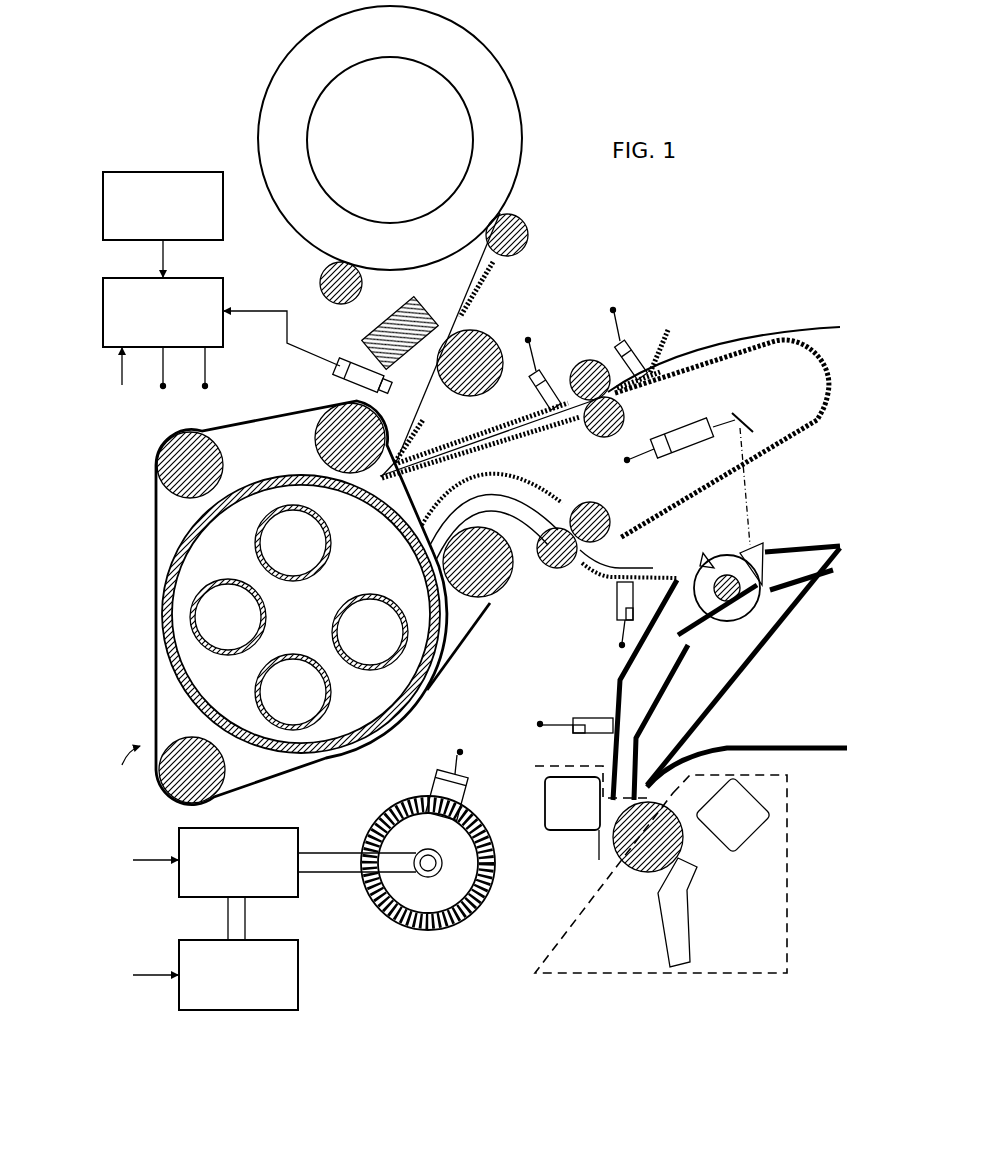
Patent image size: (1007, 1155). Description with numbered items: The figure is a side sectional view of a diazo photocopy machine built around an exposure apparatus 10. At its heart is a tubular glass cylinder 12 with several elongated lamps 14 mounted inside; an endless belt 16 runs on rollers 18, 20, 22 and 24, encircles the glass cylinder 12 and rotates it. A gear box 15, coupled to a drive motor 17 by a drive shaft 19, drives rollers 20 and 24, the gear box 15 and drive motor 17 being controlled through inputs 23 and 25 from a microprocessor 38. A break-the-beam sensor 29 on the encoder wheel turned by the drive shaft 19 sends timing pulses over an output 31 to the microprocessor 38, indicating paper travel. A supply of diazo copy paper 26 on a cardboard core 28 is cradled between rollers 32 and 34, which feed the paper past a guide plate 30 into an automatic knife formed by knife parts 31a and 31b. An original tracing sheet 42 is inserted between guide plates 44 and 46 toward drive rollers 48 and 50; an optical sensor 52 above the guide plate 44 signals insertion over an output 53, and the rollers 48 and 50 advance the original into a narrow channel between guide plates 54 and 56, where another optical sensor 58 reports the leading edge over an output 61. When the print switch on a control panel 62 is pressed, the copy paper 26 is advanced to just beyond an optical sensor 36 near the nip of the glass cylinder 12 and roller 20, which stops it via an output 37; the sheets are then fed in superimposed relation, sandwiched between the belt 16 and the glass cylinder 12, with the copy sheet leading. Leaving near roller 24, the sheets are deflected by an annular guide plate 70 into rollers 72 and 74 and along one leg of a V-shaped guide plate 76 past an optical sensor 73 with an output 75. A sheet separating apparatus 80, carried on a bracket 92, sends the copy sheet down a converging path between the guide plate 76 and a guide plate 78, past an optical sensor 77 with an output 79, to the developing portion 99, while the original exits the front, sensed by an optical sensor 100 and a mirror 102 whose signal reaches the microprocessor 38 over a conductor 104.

The exposure apparatus 10 is at (121, 769).
The glass cylinder 12 is at (167, 658).
The lamps 14 is at (333, 629).
The gear box 15 is at (300, 967).
The endless belt 16 is at (153, 523).
The drive motor 17 is at (282, 828).
The roller 18 is at (222, 446).
The drive shaft 19 is at (345, 877).
The roller 20 is at (316, 437).
The roller 22 is at (177, 727).
The input 23 is at (163, 385).
The roller 24 is at (480, 598).
The input 25 is at (205, 385).
The copy paper 26 is at (518, 104).
The cardboard core 28 is at (450, 82).
The break-the-beam sensor 29 is at (433, 785).
The guide plate 30 is at (490, 279).
The output 31 is at (122, 385).
The knife part 31a is at (383, 318).
The knife part 31b is at (480, 332).
The roller 32 is at (320, 280).
The roller 34 is at (528, 223).
The optical sensor 36 is at (337, 382).
The output 37 is at (285, 327).
The microprocessor 38 is at (220, 278).
The original tracing sheet 42 is at (778, 328).
The guide plate 44 is at (668, 342).
The guide plate 46 is at (827, 407).
The drive roller 48 is at (585, 362).
The drive roller 50 is at (593, 426).
The optical sensor 52 is at (640, 345).
The output 53 is at (620, 315).
The guide plate 54 is at (445, 447).
The guide plate 56 is at (490, 448).
The optical sensor 58 is at (541, 395).
The output 61 is at (535, 347).
The control panel 62 is at (202, 172).
The annular guide plate 70 is at (457, 488).
The roller 72 is at (608, 517).
The optical sensor 73 is at (617, 600).
The roller 74 is at (553, 569).
The output 75 is at (620, 630).
The V-shaped guide plate 76 is at (615, 687).
The optical sensor 77 is at (583, 717).
The guide plate 78 is at (665, 695).
The output 79 is at (540, 728).
The sheet separating apparatus 80 is at (718, 553).
The bracket 92 is at (758, 666).
The developing portion 99 is at (787, 880).
The optical sensor 100 is at (697, 453).
The mirror 102 is at (747, 427).
The conductor 104 is at (645, 447).